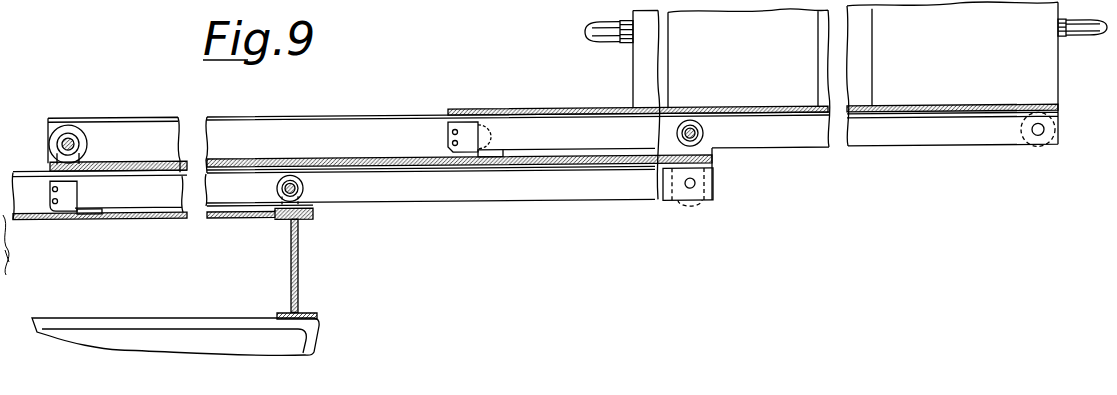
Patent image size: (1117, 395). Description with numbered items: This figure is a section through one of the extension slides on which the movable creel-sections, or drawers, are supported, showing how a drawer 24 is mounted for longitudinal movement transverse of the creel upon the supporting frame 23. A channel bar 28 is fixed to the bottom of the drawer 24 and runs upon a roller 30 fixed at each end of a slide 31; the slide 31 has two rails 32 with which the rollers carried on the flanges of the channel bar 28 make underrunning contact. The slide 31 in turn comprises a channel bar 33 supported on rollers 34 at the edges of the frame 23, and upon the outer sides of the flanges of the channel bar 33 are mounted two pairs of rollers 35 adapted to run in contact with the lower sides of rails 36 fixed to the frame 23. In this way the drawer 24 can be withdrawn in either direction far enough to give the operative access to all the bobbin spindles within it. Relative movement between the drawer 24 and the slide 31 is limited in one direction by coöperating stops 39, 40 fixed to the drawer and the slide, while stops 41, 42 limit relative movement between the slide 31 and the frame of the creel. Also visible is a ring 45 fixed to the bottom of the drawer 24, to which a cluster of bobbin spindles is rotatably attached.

The supporting frame 23 is at (189, 287).
The drawer 24 is at (626, 104).
The channel bar 28 is at (510, 110).
The roller 30 is at (72, 124).
The slide 31 is at (387, 167).
The rails 32 is at (347, 117).
The channel bar 33 is at (568, 203).
The rollers 34 is at (308, 187).
The rollers 35 is at (88, 207).
The rails 36 is at (25, 171).
The stop 39 is at (472, 147).
The stop 40 is at (500, 152).
The stop 41 is at (67, 212).
The stop 42 is at (88, 218).
The ring 45 is at (62, 0).